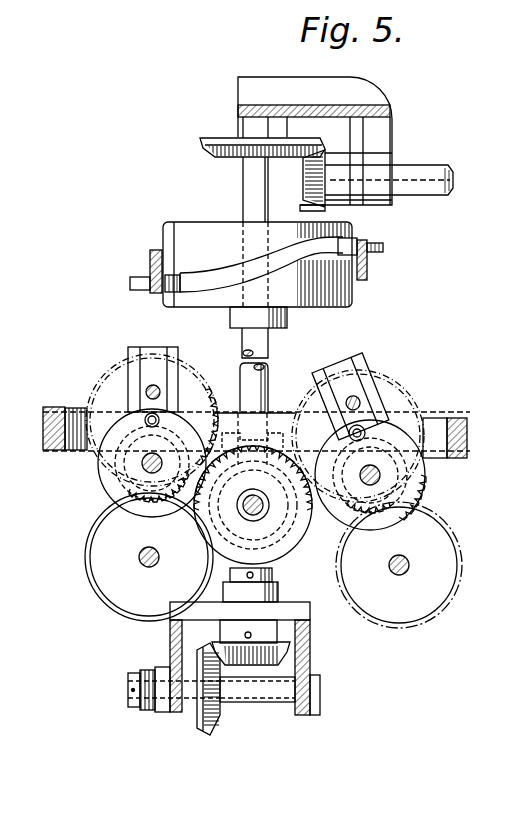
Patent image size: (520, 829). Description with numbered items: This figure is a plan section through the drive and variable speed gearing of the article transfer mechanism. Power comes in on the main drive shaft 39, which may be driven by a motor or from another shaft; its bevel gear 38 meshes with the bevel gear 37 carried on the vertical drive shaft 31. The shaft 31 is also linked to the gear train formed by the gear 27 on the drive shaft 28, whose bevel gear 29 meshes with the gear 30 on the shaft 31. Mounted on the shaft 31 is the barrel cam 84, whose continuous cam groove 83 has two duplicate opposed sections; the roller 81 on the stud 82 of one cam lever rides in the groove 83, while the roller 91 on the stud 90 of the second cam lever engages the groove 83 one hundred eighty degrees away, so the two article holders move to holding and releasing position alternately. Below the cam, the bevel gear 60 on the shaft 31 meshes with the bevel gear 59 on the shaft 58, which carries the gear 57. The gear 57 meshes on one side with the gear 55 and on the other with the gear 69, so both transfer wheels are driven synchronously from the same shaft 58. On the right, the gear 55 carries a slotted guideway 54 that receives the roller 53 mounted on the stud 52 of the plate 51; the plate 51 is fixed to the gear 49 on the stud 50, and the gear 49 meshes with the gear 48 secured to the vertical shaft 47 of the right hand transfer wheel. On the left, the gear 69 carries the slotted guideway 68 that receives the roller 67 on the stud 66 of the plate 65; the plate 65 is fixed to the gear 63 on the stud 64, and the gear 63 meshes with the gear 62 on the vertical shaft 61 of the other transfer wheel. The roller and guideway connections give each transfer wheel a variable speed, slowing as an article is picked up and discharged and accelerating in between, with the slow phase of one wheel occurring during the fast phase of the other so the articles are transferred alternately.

The gear 27 is at (141, 712).
The drive shaft 28 is at (278, 703).
The bevel gear 29 is at (218, 722).
The gear 30 is at (288, 660).
The drive shaft 31 is at (268, 375).
The bevel gear 37 is at (205, 152).
The bevel gear 38 is at (320, 208).
The main drive shaft 39 is at (424, 166).
The vertical shaft 47 is at (409, 569).
The gear 48 is at (385, 628).
The gear 49 is at (427, 469).
The stud 50 is at (390, 509).
The plate 51 is at (424, 494).
The stud 52 is at (414, 407).
The roller 53 is at (466, 414).
The guideway 54 is at (348, 365).
The gear 55 is at (397, 387).
The gear 57 is at (293, 531).
The shaft 58 is at (258, 510).
The bevel gear 59 is at (278, 581).
The bevel gear 60 is at (238, 510).
The vertical shaft 61 is at (139, 560).
The gear 62 is at (106, 607).
The gear 63 is at (118, 463).
The stud 64 is at (142, 470).
The plate 65 is at (128, 482).
The stud 66 is at (145, 418).
The roller 67 is at (146, 386).
The slotted guideway 68 is at (149, 354).
The gear 69 is at (200, 380).
The roller 81 is at (357, 241).
The stud 82 is at (383, 248).
The cam groove 83 is at (211, 287).
The barrel cam 84 is at (352, 291).
The stud 90 is at (148, 275).
The roller 91 is at (190, 273).